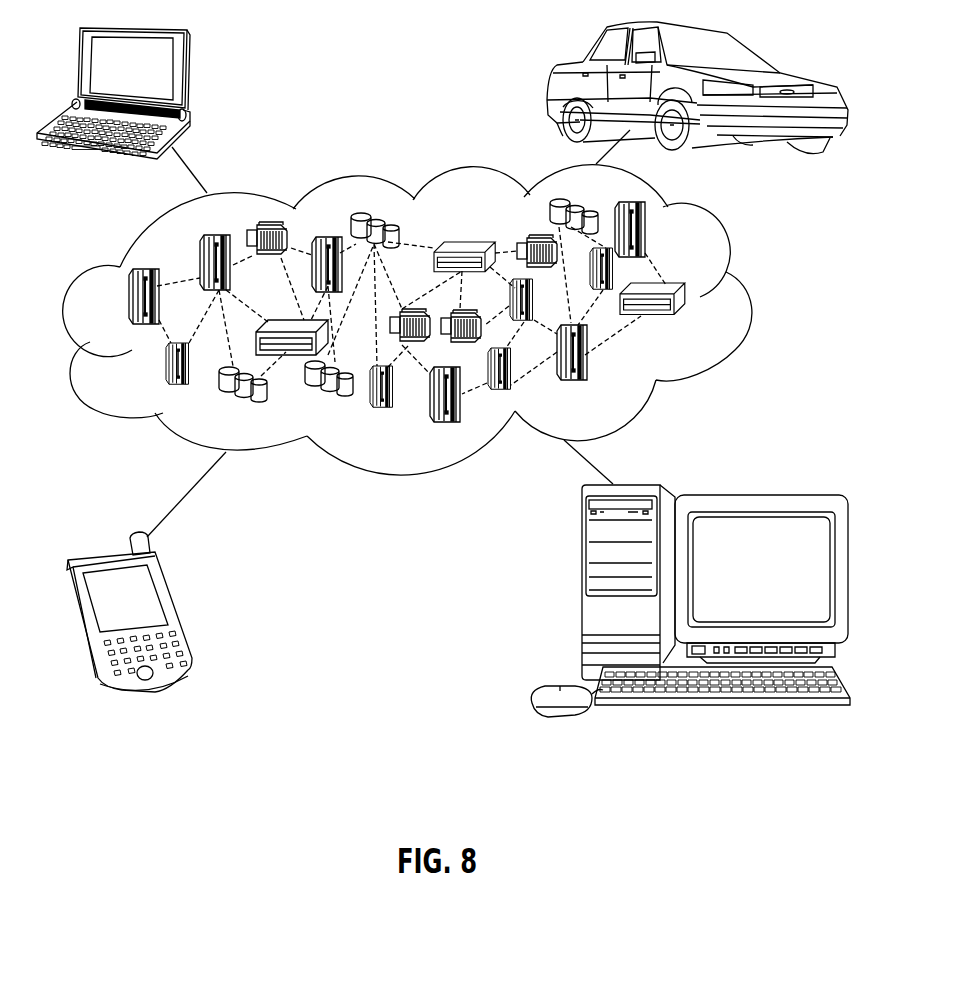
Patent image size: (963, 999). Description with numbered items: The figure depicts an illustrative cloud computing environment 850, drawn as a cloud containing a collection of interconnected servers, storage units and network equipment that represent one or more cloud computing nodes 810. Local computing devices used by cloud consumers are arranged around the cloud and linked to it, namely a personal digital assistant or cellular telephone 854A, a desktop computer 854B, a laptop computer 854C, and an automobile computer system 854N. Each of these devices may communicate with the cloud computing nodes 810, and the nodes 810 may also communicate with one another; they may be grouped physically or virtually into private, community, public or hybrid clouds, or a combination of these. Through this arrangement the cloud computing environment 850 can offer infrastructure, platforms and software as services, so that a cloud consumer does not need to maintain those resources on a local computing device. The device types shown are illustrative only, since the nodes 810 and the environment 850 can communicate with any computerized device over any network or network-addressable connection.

The cloud computing nodes 810 is at (705, 318).
The cloud computing environment 850 is at (727, 260).
The personal digital assistant (PDA) or cellular telephone 854A is at (177, 611).
The desktop computer 854B is at (582, 590).
The laptop computer 854C is at (190, 73).
The automobile computer system 854N is at (548, 78).